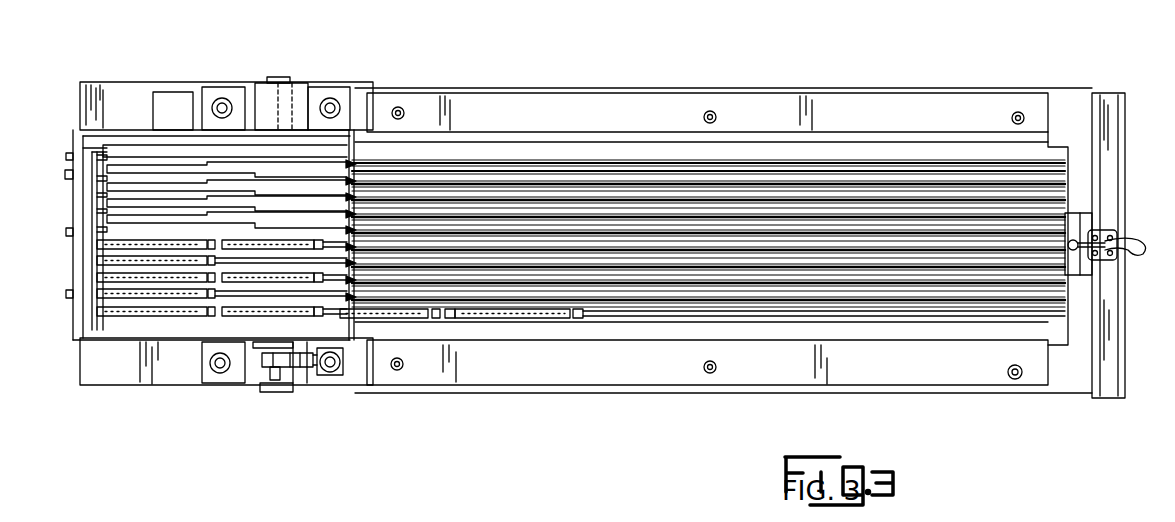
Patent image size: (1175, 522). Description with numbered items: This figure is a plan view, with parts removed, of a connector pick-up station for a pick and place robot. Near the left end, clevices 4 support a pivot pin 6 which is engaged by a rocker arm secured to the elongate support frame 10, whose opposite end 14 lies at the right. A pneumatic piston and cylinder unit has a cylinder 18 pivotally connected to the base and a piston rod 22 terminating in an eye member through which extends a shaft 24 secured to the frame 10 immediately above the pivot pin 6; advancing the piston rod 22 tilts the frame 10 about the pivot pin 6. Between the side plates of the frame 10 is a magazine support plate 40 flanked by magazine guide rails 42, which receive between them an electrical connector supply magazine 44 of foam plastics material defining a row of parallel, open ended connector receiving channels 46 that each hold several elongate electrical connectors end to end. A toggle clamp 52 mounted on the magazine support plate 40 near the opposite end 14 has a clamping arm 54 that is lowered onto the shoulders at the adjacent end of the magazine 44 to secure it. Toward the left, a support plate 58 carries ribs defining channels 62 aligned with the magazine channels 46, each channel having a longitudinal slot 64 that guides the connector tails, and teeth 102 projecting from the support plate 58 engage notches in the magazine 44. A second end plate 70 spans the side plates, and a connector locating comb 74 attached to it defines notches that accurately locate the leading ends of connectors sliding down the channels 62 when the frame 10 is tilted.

The clevices 4 is at (298, 104).
The pivot pin 6 is at (280, 80).
The elongate support frame 10 is at (549, 88).
The opposite end 14 is at (1123, 163).
The cylinder 18 is at (342, 371).
The piston rod 22 is at (330, 371).
The shaft 24 is at (260, 382).
The magazine support plate 40 is at (891, 92).
The magazine guide rails 42 is at (662, 100).
The electrical connector supply magazine 44 is at (1057, 153).
The connector receiving channels 46 is at (832, 204).
The toggle clamp 52 is at (1130, 256).
The clamping arm 54 is at (1077, 217).
The support plate 58 is at (350, 132).
The channels 62 is at (240, 158).
The longitudinal slot 64 is at (172, 157).
The second end plate 70 is at (75, 132).
The connector locating comb 74 is at (91, 312).
The teeth 102 is at (353, 198).